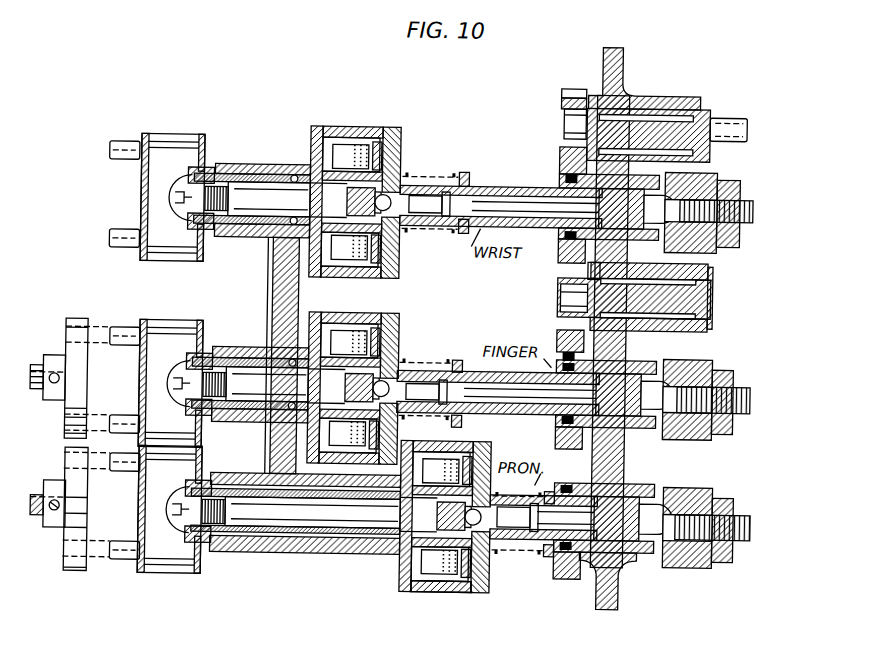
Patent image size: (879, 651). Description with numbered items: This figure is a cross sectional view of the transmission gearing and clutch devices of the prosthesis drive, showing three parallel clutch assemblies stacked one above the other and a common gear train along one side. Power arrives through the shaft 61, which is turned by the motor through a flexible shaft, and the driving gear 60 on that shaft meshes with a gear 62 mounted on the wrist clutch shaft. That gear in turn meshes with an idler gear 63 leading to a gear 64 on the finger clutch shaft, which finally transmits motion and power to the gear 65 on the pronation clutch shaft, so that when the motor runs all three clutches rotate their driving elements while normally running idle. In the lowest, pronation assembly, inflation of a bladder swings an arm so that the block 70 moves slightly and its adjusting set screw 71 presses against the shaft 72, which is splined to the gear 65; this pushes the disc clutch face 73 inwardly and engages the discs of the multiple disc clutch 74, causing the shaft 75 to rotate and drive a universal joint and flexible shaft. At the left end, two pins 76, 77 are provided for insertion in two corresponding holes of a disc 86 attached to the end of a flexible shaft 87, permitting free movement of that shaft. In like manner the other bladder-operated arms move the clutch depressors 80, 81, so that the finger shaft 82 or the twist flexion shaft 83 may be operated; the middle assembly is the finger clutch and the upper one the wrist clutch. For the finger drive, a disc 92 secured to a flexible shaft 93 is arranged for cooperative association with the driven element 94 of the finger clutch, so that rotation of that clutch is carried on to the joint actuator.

The driving gear 60 is at (570, 93).
The shaft 61 is at (723, 113).
The gear 62 is at (560, 155).
The idler gear 63 is at (558, 264).
The gear 64 is at (556, 330).
The gear 65 is at (557, 564).
The block 70 is at (689, 483).
The set screw 71 is at (741, 508).
The shaft 72 is at (623, 541).
The disc clutch face 73 is at (490, 458).
The multiple disc clutch 74 is at (436, 594).
The shaft 75 is at (274, 533).
The pin 76 is at (129, 475).
The pin 77 is at (121, 552).
The clutch depressor 80 is at (708, 364).
The clutch depressor 81 is at (711, 176).
The finger shaft 82 is at (475, 366).
The twist flexion shaft 83 is at (479, 189).
The disc 86 is at (70, 536).
The flexible shaft 87 is at (36, 501).
The disc 92 is at (70, 361).
The flexible shaft 93 is at (36, 391).
The driven element 94 is at (345, 317).